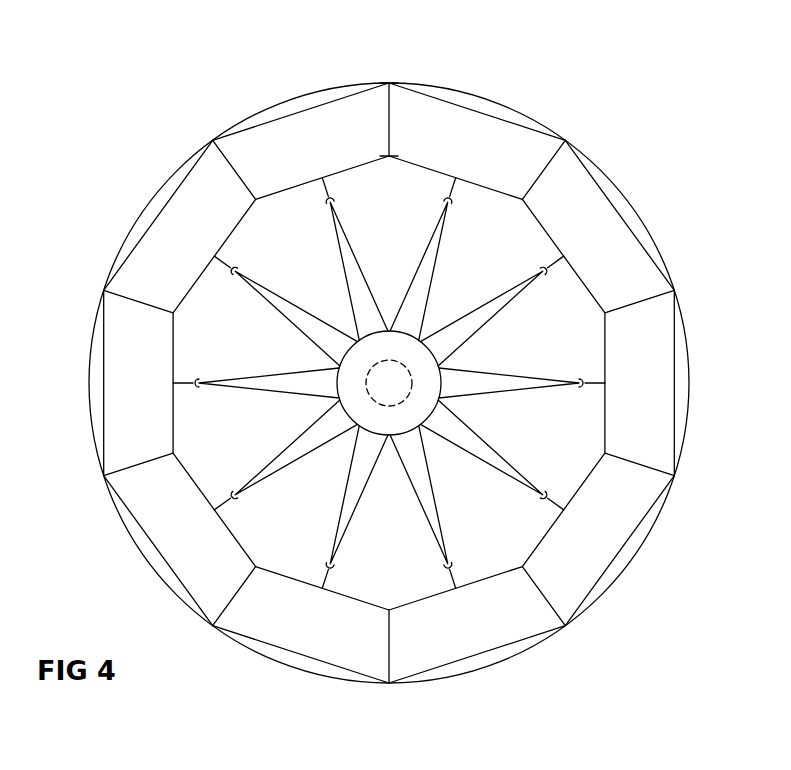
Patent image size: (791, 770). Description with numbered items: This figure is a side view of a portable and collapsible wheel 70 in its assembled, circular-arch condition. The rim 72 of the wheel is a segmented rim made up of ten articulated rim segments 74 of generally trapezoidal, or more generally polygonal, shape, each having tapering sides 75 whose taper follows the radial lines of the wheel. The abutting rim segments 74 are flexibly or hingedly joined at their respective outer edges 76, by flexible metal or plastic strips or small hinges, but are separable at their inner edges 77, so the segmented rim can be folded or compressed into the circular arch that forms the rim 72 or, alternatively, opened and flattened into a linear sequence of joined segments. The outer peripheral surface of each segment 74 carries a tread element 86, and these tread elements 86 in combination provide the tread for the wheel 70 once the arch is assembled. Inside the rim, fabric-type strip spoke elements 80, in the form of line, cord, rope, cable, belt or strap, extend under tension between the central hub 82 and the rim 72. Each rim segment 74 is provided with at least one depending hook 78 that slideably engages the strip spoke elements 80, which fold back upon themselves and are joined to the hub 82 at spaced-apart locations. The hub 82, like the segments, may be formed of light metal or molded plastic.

The portable collapsible wheel 70 is at (710, 94).
The rim 72 is at (634, 206).
The rim segments 74 is at (280, 156).
The tapering sides 75 is at (391, 118).
The outer edges 76 is at (390, 82).
The inner edges 77 is at (390, 156).
The hook 78 is at (323, 178).
The strip spoke elements 80 is at (358, 265).
The hub 82 is at (377, 359).
The tread element 86 is at (503, 113).